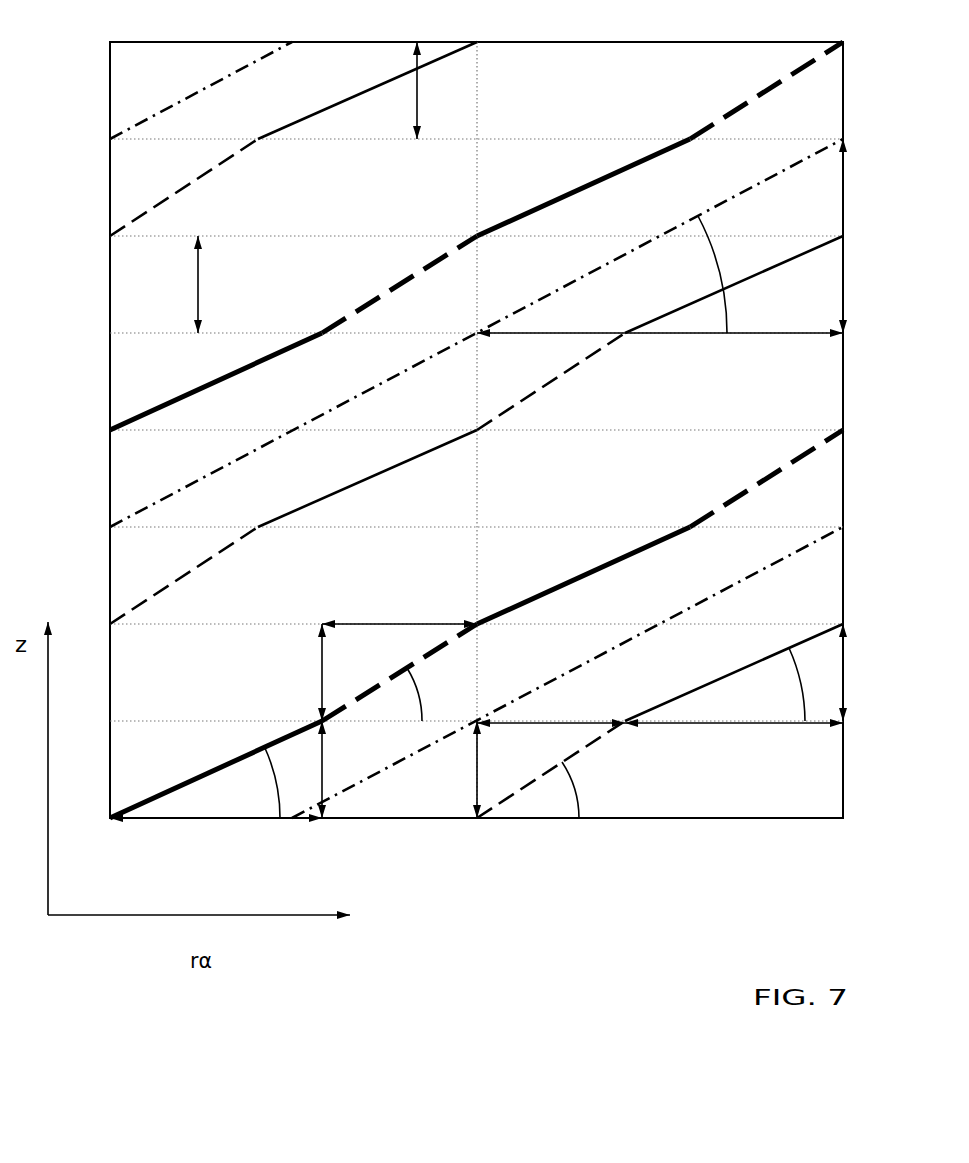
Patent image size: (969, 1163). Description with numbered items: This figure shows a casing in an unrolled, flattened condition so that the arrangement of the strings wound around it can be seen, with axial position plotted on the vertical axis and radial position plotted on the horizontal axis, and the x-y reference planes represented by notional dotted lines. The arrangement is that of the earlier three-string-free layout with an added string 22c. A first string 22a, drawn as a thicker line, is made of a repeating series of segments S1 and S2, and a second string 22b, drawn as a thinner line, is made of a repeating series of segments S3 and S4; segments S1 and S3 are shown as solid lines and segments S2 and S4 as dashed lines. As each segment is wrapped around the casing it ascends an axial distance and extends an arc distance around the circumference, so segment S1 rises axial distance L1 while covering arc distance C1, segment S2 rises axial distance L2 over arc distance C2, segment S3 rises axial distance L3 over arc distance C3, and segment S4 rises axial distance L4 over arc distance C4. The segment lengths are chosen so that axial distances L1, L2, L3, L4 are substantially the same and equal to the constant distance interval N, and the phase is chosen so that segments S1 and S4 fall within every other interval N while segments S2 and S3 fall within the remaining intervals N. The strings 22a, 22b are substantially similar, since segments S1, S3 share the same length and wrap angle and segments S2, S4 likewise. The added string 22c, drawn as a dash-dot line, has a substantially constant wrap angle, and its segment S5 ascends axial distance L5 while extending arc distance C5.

The first string 22a is at (476, 430).
The second string 22b is at (476, 498).
The string 22c is at (476, 430).
The segment S1 is at (189, 779).
The segment S2 is at (372, 684).
The segment S3 is at (697, 692).
The segment S4 is at (528, 790).
The segment S5 is at (574, 278).
The arc distance C1 is at (216, 837).
The arc distance C2 is at (399, 604).
The arc distance C3 is at (734, 743).
The arc distance C4 is at (551, 706).
The arc distance C5 is at (660, 354).
The axial distance L1 is at (337, 769).
The axial distance L2 is at (307, 672).
The axial distance L3 is at (861, 672).
The axial distance L4 is at (461, 769).
The axial distance L5 is at (861, 236).
The distance interval N is at (323, 187).